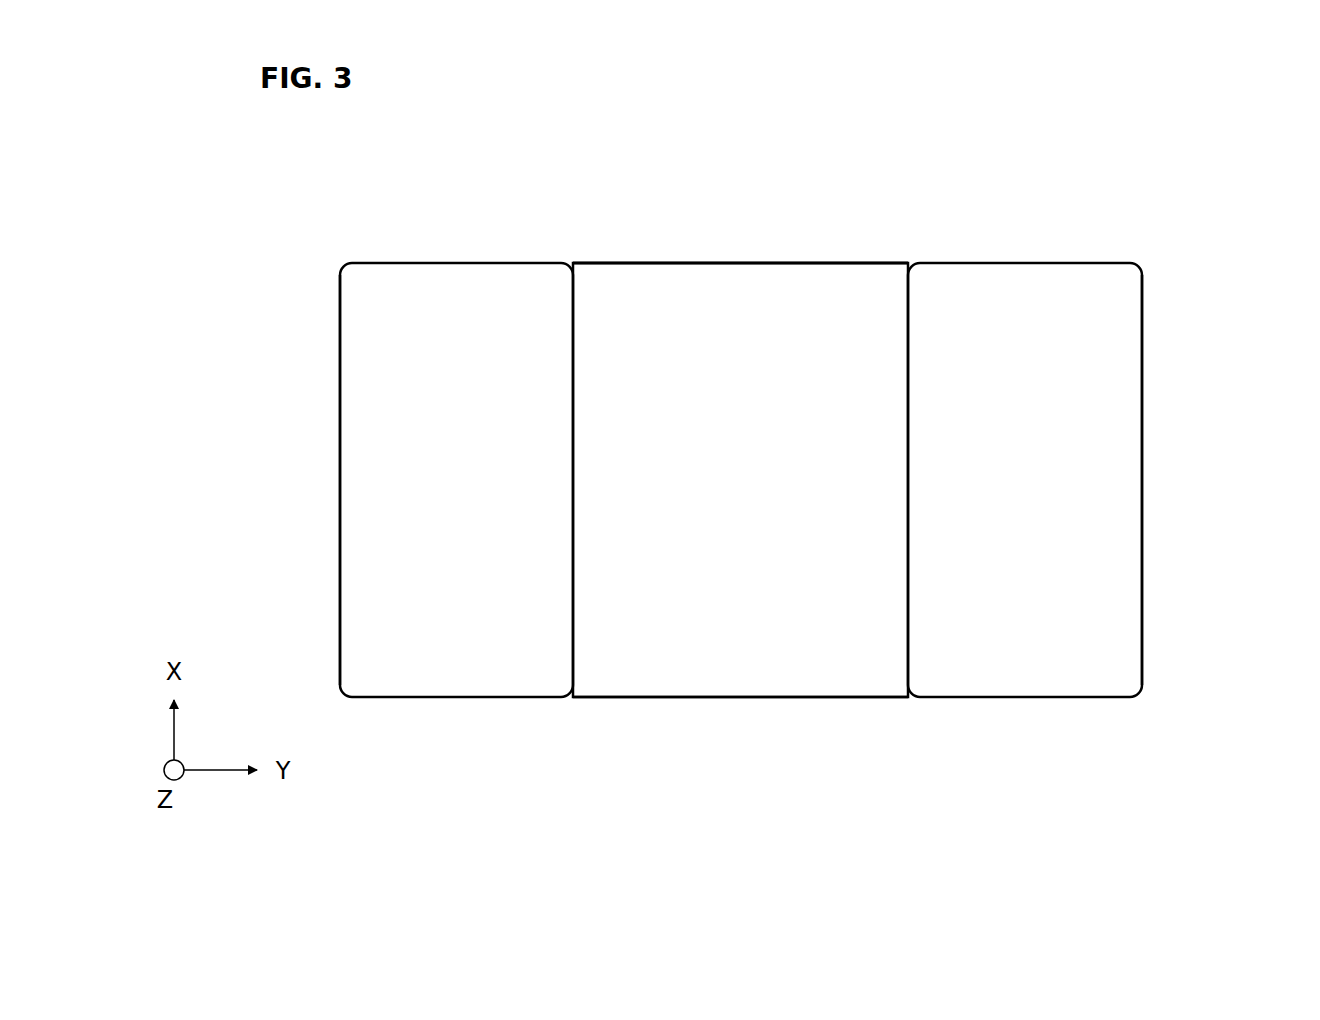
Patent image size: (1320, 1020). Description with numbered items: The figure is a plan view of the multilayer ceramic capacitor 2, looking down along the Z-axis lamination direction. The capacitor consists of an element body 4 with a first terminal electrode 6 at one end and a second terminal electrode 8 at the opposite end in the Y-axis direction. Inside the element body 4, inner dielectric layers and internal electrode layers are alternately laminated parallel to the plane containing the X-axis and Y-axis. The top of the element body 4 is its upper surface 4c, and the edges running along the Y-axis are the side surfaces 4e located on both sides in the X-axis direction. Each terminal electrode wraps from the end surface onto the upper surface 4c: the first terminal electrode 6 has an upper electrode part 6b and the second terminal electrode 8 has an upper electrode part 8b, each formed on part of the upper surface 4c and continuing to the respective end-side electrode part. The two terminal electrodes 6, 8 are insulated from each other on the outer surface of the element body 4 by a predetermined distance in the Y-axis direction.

The multilayer ceramic capacitor 2 is at (743, 459).
The element body 4 is at (767, 255).
The upper surface 4c is at (672, 295).
The side surface 4e is at (845, 262).
The first terminal electrode 6 is at (405, 437).
The upper electrode part 6b is at (364, 475).
The second terminal electrode 8 is at (1078, 438).
The upper electrode part 8b is at (1115, 455).